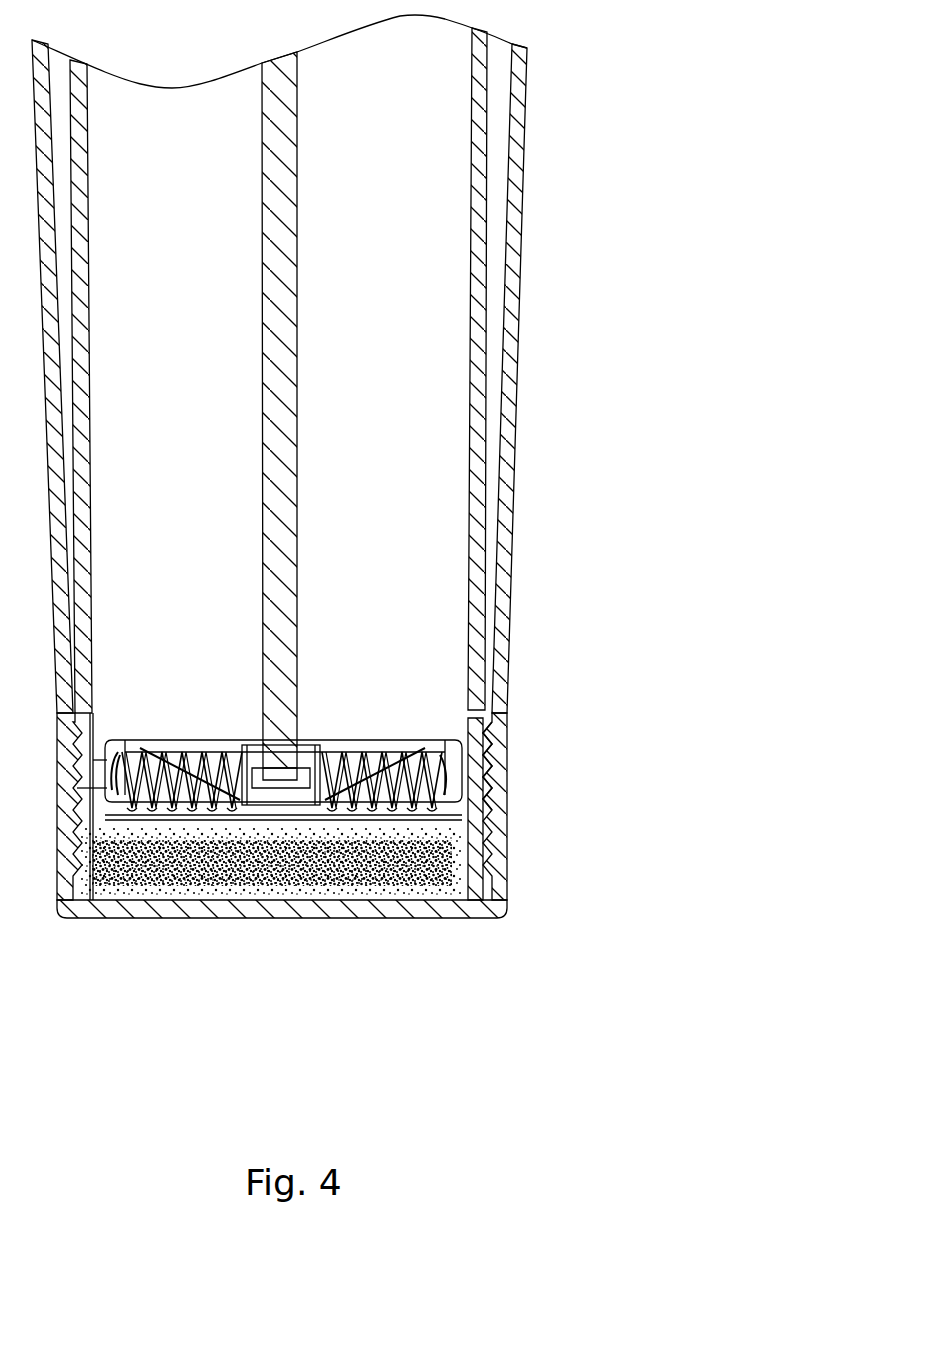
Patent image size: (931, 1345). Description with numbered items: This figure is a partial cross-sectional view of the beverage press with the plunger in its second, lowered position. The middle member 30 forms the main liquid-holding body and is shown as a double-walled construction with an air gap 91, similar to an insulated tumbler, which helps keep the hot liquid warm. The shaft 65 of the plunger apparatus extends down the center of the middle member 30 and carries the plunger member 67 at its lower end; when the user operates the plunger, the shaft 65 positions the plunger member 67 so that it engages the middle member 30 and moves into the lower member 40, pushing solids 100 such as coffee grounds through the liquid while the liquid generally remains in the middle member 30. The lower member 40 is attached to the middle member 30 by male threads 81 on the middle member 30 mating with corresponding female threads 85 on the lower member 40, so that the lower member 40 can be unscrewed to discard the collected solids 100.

The middle member 30 is at (523, 267).
The air gap 91 is at (528, 190).
The shaft 65 is at (313, 388).
The plunger member 67 is at (448, 760).
The male threads 81 is at (505, 754).
The lower member 40 is at (505, 787).
The female threads 85 is at (505, 845).
The solids 100 is at (185, 890).